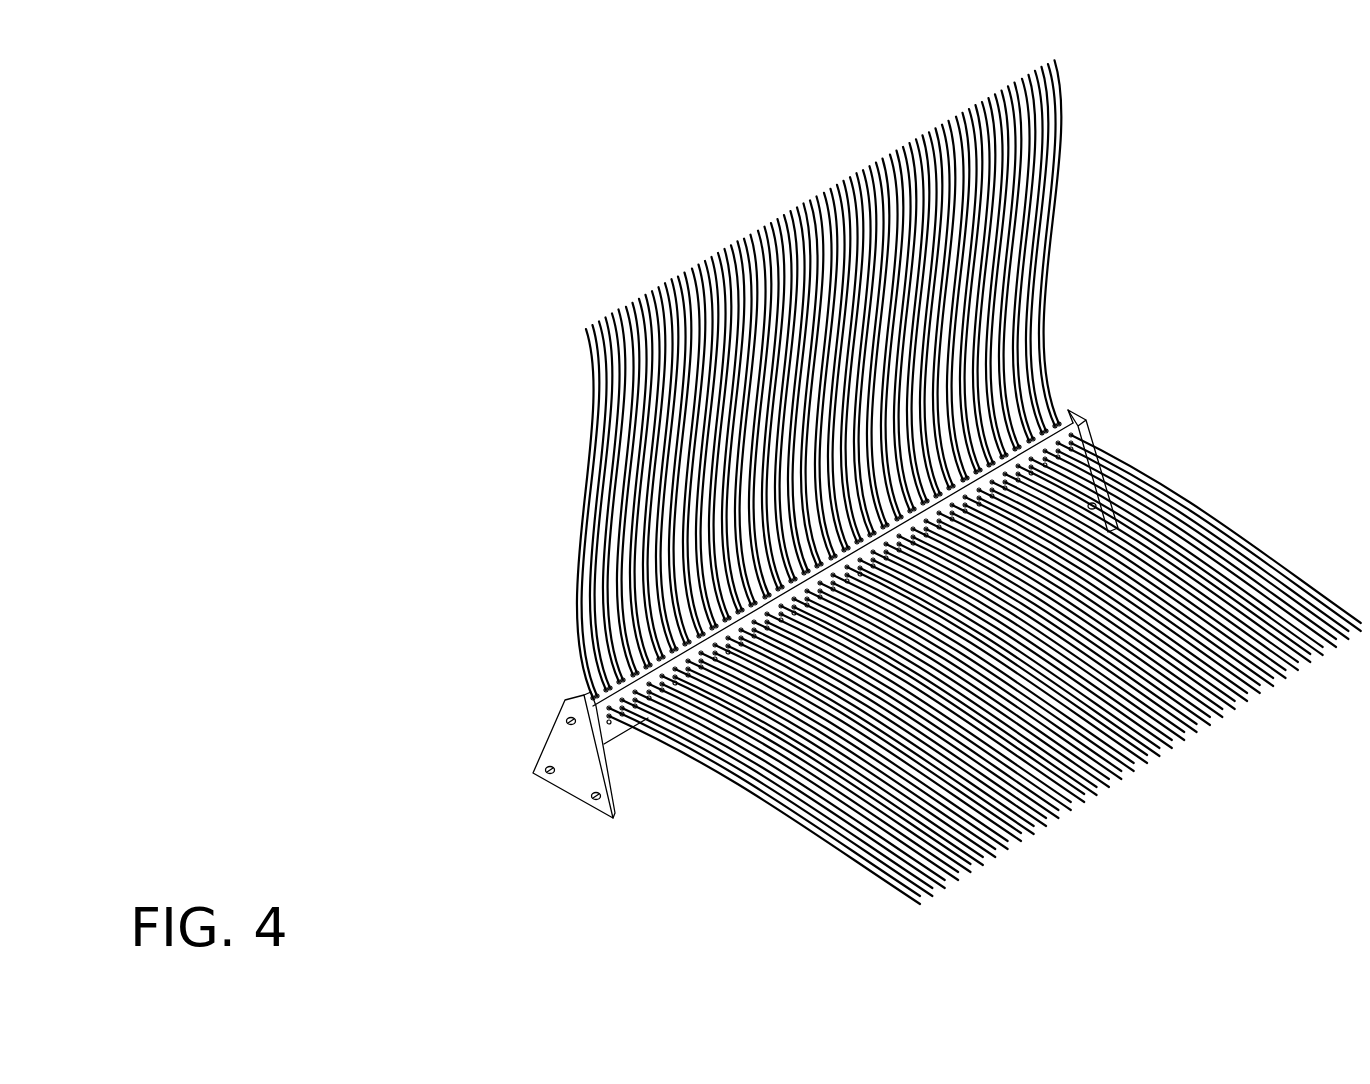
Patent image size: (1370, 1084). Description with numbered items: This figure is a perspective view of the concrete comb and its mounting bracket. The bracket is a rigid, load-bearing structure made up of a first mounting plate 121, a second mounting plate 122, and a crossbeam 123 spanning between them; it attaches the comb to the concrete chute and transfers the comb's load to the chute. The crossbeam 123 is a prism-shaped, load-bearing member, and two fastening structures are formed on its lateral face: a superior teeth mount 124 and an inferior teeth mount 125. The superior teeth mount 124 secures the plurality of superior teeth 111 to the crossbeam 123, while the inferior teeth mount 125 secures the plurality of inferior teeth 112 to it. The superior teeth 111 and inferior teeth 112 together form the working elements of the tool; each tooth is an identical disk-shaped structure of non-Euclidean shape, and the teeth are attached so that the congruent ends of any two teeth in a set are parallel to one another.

The plurality of superior teeth 111 is at (1057, 174).
The plurality of inferior teeth 112 is at (1195, 535).
The first mounting plate 121 is at (562, 772).
The second mounting plate 122 is at (1093, 444).
The crossbeam 123 is at (1063, 410).
The superior teeth mount 124 is at (580, 688).
The inferior teeth mount 125 is at (600, 732).